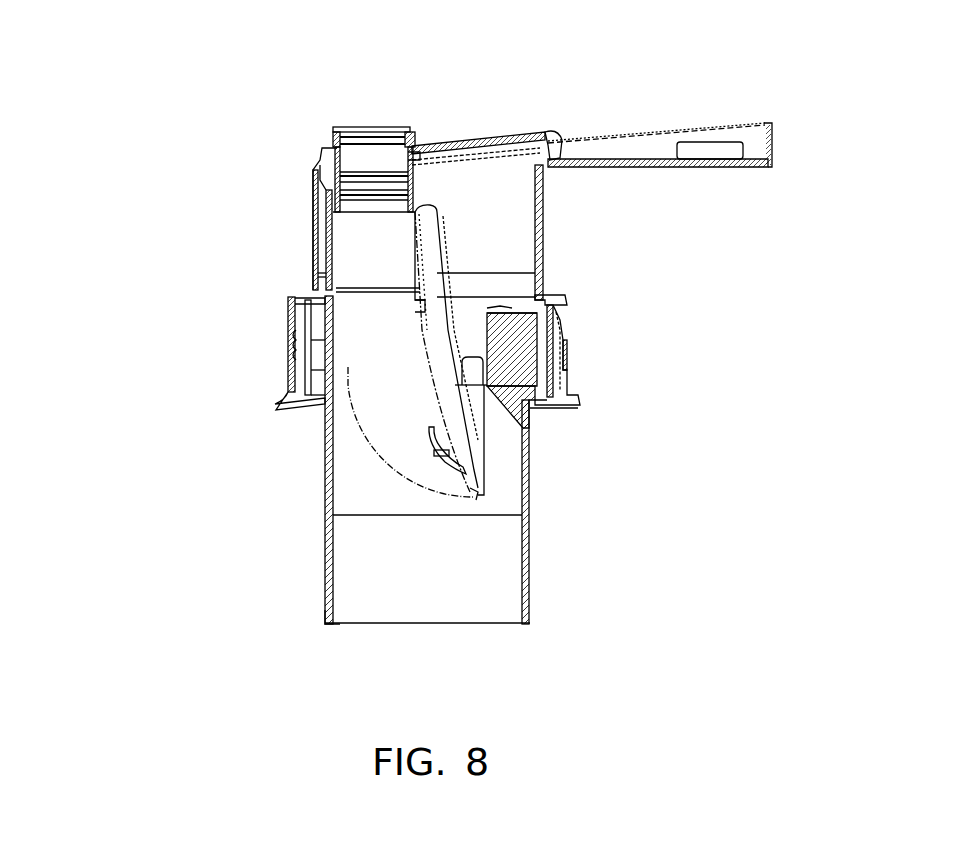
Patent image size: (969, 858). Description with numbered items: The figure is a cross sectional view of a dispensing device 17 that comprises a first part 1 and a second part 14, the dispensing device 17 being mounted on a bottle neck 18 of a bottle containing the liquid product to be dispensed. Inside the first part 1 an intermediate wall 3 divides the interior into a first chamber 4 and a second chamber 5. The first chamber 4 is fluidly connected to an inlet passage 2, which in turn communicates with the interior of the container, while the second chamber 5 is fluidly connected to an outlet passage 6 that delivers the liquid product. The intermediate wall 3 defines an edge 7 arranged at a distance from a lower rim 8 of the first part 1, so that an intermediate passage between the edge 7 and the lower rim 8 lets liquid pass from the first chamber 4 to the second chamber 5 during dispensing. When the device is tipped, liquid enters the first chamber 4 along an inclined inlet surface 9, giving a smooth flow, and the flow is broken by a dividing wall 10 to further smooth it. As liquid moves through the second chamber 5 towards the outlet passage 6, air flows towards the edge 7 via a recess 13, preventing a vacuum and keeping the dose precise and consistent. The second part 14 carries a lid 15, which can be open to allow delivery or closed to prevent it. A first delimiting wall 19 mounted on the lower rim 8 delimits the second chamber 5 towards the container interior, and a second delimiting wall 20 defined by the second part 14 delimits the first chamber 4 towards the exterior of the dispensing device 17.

The first part 1 is at (529, 575).
The inlet passage 2 is at (488, 316).
The intermediate wall 3 is at (386, 420).
The first chamber 4 is at (458, 326).
The second chamber 5 is at (348, 422).
The outlet passage 6 is at (375, 126).
The edge 7 is at (476, 479).
The lower rim 8 is at (327, 625).
The inlet surface 9 is at (500, 403).
The dividing wall 10 is at (516, 329).
The recess 13 is at (450, 398).
The second part 14 is at (539, 214).
The lid 15 is at (752, 165).
The dispensing device 17 is at (142, 85).
The bottle neck 18 is at (578, 401).
The first delimiting wall 19 is at (466, 624).
The second delimiting wall 20 is at (480, 150).